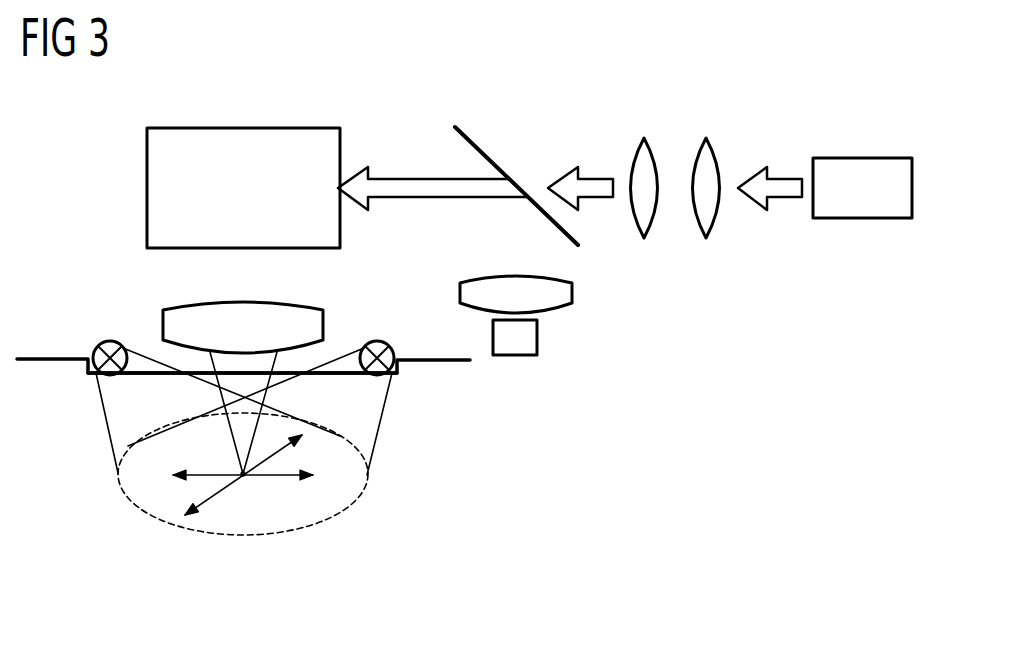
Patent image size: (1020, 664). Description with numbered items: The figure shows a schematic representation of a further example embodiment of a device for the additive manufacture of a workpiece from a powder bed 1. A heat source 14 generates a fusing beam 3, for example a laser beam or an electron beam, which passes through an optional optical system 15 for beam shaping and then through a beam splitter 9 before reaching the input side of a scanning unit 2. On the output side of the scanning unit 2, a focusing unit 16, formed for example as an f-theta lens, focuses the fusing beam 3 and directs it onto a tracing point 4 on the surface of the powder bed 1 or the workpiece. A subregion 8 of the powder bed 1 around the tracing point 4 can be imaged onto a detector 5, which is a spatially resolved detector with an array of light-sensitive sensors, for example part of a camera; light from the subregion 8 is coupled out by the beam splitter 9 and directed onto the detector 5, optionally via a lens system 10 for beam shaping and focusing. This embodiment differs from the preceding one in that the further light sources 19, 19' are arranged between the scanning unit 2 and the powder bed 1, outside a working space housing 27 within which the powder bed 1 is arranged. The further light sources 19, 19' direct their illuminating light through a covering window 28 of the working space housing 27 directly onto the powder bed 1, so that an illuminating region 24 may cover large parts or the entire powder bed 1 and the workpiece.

The powder bed 1 is at (318, 587).
The scanning unit 2 is at (146, 181).
The fusing beam 3 is at (408, 179).
The tracing point 4 is at (248, 480).
The detector 5 is at (537, 337).
The subregion 8 is at (224, 468).
The beam splitter 9 is at (478, 143).
The lens system 10 is at (572, 292).
The heat source 14 is at (868, 158).
The optical system 15 is at (720, 135).
The focusing unit 16 is at (163, 318).
The further light source 19 is at (190, 392).
The further light source 19' is at (271, 377).
The illuminating region 24 is at (174, 524).
The working space housing 27 is at (453, 364).
The covering window 28 is at (358, 375).